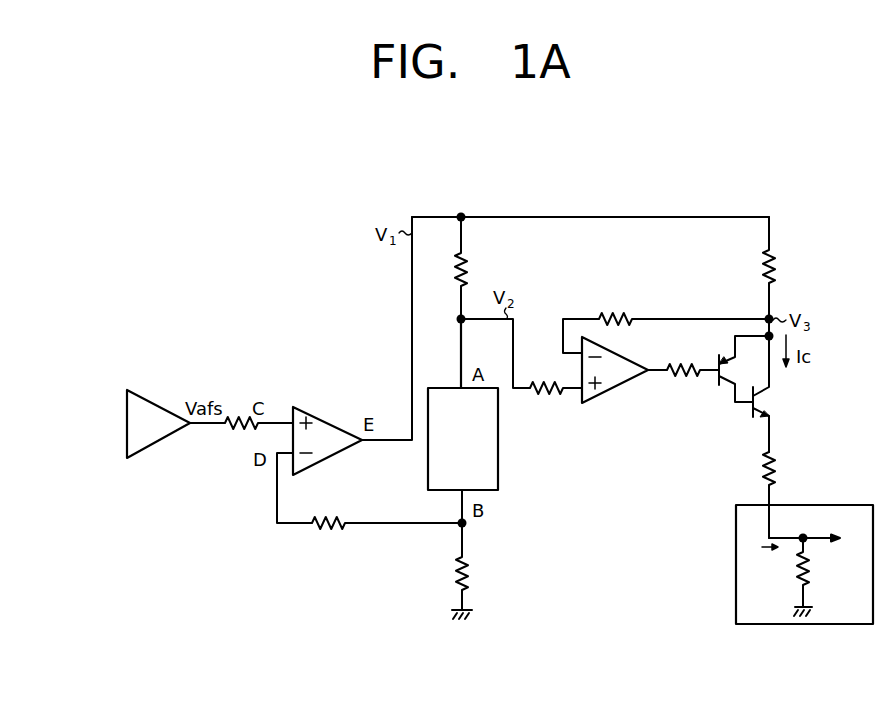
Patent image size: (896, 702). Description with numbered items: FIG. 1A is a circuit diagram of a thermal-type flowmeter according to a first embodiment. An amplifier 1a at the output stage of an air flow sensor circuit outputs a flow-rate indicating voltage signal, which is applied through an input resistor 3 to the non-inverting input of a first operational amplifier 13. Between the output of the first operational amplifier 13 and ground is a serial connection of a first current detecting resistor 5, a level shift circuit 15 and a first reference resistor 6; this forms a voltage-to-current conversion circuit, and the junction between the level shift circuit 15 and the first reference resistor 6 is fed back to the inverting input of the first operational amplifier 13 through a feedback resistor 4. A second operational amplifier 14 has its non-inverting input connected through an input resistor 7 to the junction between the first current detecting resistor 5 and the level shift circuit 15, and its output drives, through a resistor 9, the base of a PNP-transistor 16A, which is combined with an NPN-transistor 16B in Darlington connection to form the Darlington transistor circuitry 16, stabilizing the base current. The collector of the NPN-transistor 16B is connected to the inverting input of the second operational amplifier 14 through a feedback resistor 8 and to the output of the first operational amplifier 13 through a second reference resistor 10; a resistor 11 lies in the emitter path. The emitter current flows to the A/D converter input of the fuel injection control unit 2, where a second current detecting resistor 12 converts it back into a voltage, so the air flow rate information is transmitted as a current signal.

The amplifier 1a is at (162, 447).
The fuel injection control unit 2 is at (804, 546).
The input resistor 3 is at (235, 436).
The feedback resistor 4 is at (329, 533).
The first current detecting resistor 5 is at (475, 269).
The first reference resistor 6 is at (475, 575).
The input resistor 7 is at (548, 399).
The feedback resistor 8 is at (615, 310).
The resistor 9 is at (685, 361).
The second reference resistor 10 is at (780, 269).
The resistor 11 is at (757, 471).
The second current detecting resistor 12 is at (815, 565).
The first operational amplifier 13 is at (343, 430).
The second operational amplifier 14 is at (625, 402).
The level shift circuit 15 is at (500, 474).
The Darlington transistor circuitry 16 is at (747, 394).
The PNP-transistor 16A is at (744, 369).
The NPN-transistor 16B is at (777, 394).